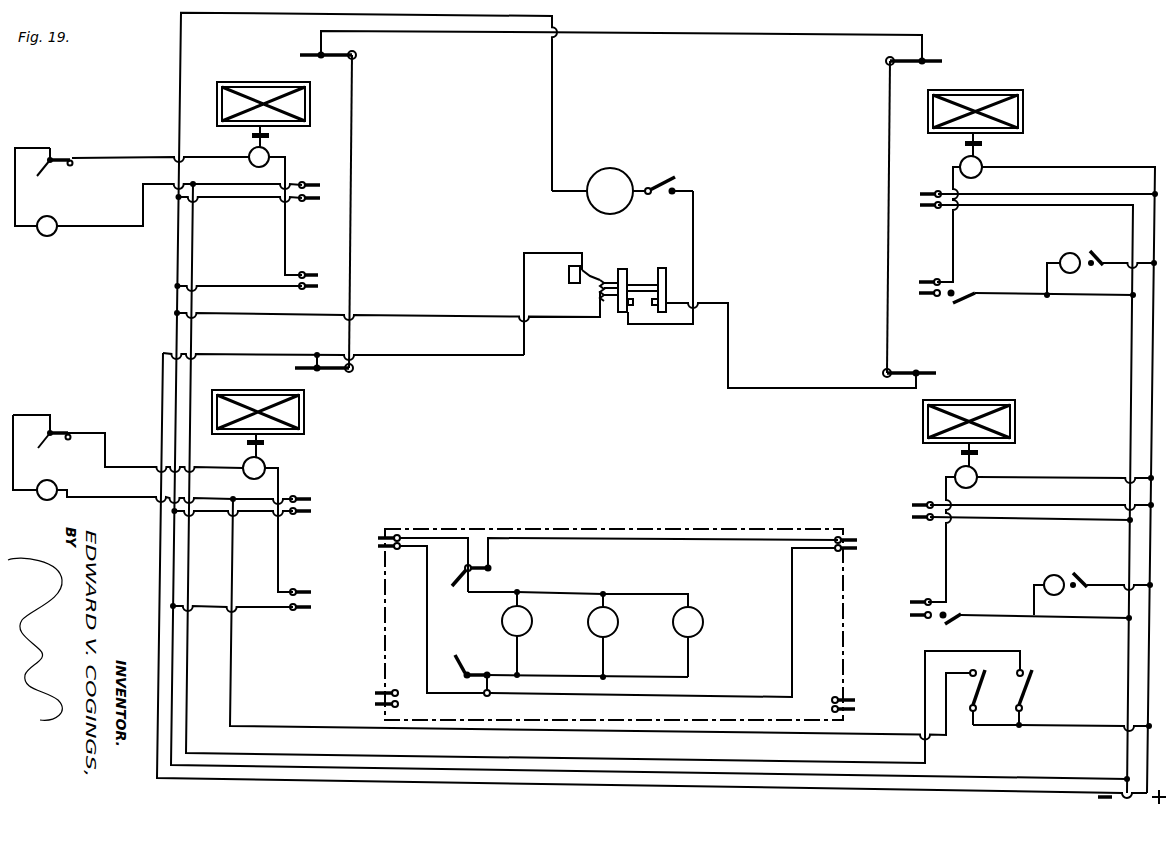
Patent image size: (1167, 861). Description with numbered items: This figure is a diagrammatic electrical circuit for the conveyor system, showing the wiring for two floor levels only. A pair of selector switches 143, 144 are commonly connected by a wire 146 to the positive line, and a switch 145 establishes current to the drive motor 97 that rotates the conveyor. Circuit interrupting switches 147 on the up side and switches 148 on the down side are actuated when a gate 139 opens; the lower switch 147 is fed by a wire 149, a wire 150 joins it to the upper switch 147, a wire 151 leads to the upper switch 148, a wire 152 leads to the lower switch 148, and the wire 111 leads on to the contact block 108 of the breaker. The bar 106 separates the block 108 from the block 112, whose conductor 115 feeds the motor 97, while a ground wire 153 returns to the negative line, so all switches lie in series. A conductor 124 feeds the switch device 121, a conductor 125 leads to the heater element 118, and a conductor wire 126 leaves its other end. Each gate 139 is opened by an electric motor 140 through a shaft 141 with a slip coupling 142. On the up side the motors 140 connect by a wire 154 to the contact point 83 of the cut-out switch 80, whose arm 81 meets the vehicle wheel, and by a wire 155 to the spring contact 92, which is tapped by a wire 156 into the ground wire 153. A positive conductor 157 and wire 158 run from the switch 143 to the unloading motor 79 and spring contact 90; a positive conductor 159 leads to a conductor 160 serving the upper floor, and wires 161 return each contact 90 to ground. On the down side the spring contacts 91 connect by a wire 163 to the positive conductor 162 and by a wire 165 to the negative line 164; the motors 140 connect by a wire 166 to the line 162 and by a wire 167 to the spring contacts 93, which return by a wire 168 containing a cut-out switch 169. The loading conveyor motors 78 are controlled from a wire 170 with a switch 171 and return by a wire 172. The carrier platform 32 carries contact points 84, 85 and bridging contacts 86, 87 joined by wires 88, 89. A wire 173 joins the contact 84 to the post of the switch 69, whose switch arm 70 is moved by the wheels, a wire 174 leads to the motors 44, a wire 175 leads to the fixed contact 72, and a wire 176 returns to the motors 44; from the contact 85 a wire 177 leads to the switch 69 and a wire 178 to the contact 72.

The carrier platform 32 is at (600, 529).
The motors 44 is at (534, 629).
The electrical switches 69 is at (464, 566).
The switch arms 70 is at (455, 585).
The fixed contact 72 is at (490, 568).
The motors 78 is at (1066, 256).
The motors 79 is at (46, 237).
The cut-out switch 80 is at (52, 157).
The arm 81 is at (44, 166).
The fixed contact point 83 is at (72, 166).
The contact points 84 is at (372, 539).
The contact points 85 is at (860, 543).
The bridging contacts 86 is at (373, 695).
The bridging contacts 87 is at (860, 708).
The wire 88 is at (398, 705).
The wire 89 is at (832, 705).
The spring contacts 90 is at (312, 186).
The spring contacts 91 is at (918, 197).
The spring contacts 92 is at (312, 277).
The spring contacts 93 is at (916, 283).
The drive motor 97 is at (614, 178).
The bar 106 is at (645, 284).
The contact block 108 is at (664, 268).
The flexible wire 111 is at (729, 338).
The block 112 is at (620, 268).
The flexible electrical conductor 115 is at (650, 326).
The coiled heater element 118 is at (604, 279).
The electrical switch device 121 is at (568, 272).
The electrical conductor 124 is at (530, 256).
The conductor 125 is at (591, 270).
The conductor wire 126 is at (545, 319).
The gates 139 is at (252, 75).
The electric motor 140 is at (249, 165).
The shaft 141 is at (271, 145).
The slip coupling 142 is at (266, 443).
The selector switch 143 is at (976, 690).
The selector switch 144 is at (1029, 690).
The switch 145 is at (668, 181).
The wire 146 is at (1063, 728).
The circuit interrupting switches 147 is at (337, 58).
The circuit interrupting switches 148 is at (908, 63).
The wire 149 is at (517, 783).
The wire 150 is at (352, 292).
The wire 151 is at (443, 34).
The wire 152 is at (887, 291).
The ground wire 153 is at (550, 147).
The wire 154 is at (135, 155).
The wire 155 is at (286, 231).
The wire 156 is at (236, 287).
The positive conductor 157 is at (296, 729).
The wire 158 is at (128, 494).
The positive electrical conductor 159 is at (415, 763).
The conductor 160 is at (126, 227).
The wires 161 is at (232, 200).
The positive conductor 162 is at (1132, 362).
The wire 163 is at (1052, 194).
The negative line 164 is at (1150, 426).
The wire 165 is at (996, 208).
The wire 166 is at (1085, 167).
The wire 167 is at (954, 258).
The wire 168 is at (1018, 296).
The cut-out switch 169 is at (958, 306).
The wire 170 is at (1105, 258).
The switch 171 is at (1099, 268).
The wire 172 is at (1047, 282).
The wire 173 is at (455, 535).
The wire 174 is at (568, 593).
The wire 175 is at (427, 647).
The wire 176 is at (550, 676).
The wire 177 is at (694, 541).
The wire 178 is at (745, 697).